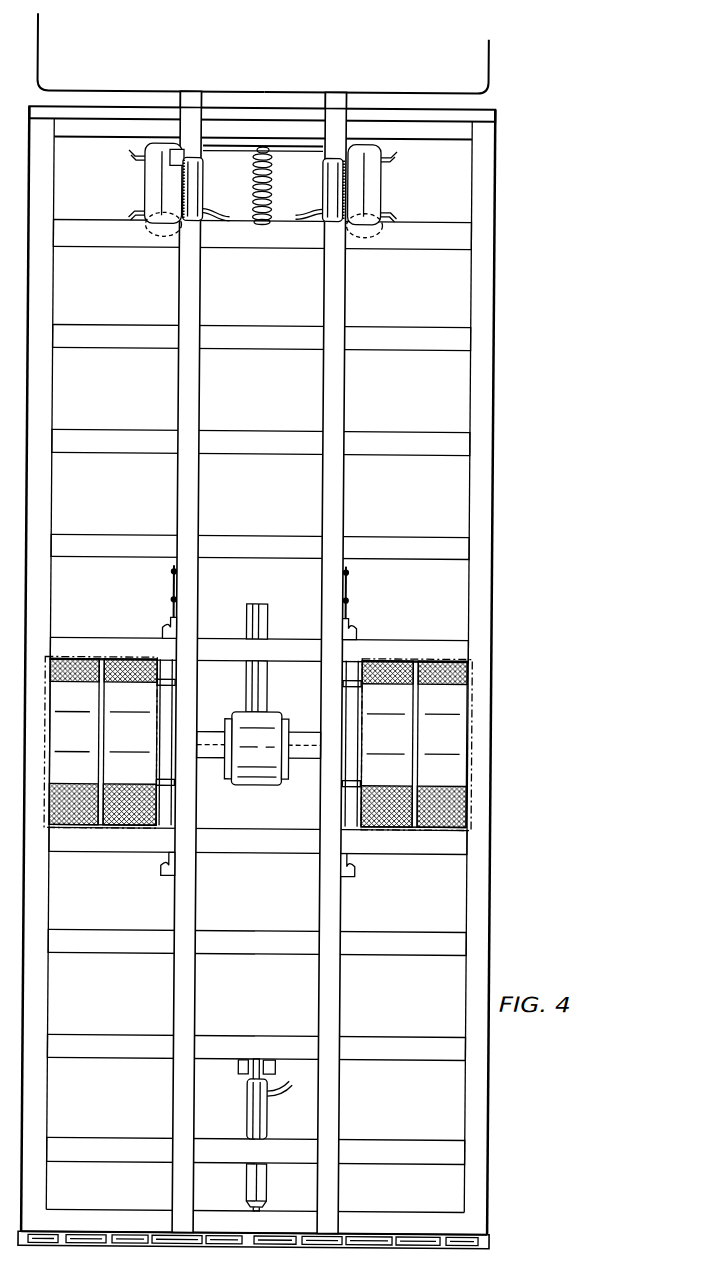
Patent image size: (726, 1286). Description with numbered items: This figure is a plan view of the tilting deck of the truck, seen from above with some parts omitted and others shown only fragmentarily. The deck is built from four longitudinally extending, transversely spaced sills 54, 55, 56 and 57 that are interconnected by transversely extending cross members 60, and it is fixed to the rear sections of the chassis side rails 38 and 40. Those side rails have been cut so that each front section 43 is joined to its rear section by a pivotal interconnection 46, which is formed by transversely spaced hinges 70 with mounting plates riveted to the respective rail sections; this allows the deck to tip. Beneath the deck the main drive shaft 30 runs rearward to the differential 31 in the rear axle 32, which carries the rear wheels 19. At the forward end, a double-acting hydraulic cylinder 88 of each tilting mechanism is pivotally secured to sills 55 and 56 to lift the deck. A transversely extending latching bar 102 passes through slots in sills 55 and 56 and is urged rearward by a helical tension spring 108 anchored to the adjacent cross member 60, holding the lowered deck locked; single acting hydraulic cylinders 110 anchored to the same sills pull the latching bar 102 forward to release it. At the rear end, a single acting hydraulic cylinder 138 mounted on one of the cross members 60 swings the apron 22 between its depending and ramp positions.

The rear wheels 19 is at (124, 703).
The apron 22 is at (426, 1236).
The main drive shaft 30 is at (261, 625).
The differential 31 is at (258, 767).
The rear axle 32 is at (305, 740).
The side rail 38 is at (328, 88).
The side rail 40 is at (184, 88).
The front section 43 is at (188, 100).
The pivotal interconnection 46 is at (166, 586).
The sill 54 is at (480, 344).
The sill 55 is at (333, 410).
The sill 56 is at (188, 411).
The sill 57 is at (40, 411).
The cross members 60 is at (451, 236).
The hinges 70 is at (159, 618).
The double-acting hydraulic cylinder 88 is at (156, 184).
The latching bar 102 is at (233, 148).
The helical tension spring 108 is at (254, 220).
The single acting hydraulic cylinders 110 is at (200, 205).
The single acting hydraulic cylinder 138 is at (253, 1127).